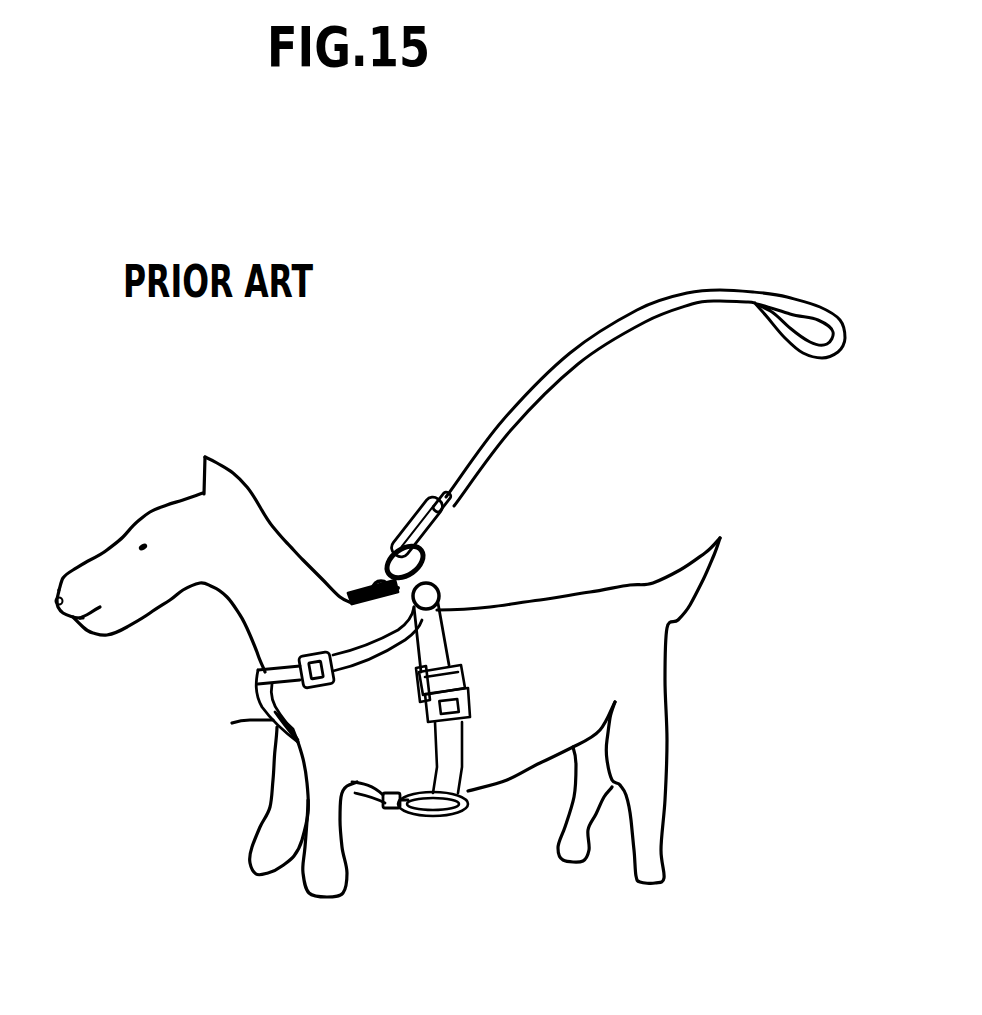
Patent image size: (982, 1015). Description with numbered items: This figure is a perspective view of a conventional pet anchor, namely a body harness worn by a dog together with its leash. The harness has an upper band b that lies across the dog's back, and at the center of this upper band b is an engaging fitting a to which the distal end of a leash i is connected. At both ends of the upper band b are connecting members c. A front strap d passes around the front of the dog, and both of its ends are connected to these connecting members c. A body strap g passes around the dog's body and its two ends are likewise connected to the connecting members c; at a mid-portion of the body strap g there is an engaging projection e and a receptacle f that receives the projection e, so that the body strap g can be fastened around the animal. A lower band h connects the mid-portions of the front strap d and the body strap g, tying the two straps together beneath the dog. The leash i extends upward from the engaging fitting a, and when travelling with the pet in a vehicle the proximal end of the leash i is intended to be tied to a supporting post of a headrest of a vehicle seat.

The engaging fitting a is at (450, 535).
The upper band b is at (432, 570).
The connecting members c is at (357, 592).
The front strap d is at (362, 677).
The engaging projection e is at (465, 707).
The receptacle f is at (457, 664).
The body strap g is at (450, 762).
The lower band h is at (270, 720).
The leash i is at (503, 423).